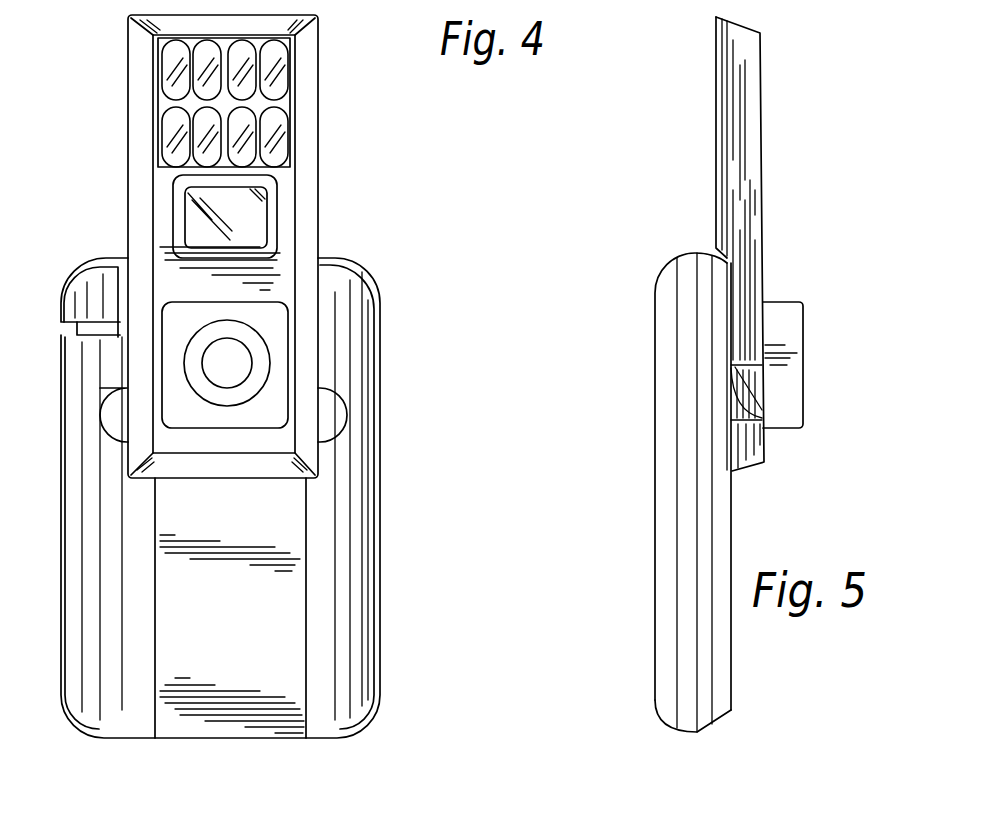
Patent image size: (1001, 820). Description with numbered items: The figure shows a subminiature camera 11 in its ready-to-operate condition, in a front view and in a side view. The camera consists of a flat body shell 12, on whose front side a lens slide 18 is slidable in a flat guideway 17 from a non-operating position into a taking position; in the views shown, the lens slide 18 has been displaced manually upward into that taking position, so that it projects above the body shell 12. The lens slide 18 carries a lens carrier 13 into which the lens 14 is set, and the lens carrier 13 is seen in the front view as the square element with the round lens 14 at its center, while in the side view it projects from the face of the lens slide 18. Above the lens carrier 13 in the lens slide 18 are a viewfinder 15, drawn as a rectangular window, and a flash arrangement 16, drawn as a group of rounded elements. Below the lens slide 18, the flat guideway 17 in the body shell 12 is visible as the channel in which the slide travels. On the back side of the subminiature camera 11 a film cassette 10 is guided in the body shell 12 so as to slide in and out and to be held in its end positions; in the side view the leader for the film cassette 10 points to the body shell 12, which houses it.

In FIG. 5, the film cassette 10 is at (660, 287).
In FIG. 4, the subminiature camera 11 is at (83, 113).
In FIG. 4, the body shell 12 is at (365, 318).
In FIG. 5, the body shell 12 is at (722, 690).
In FIG. 4, the lens carrier 13 is at (278, 325).
In FIG. 5, the lens carrier 13 is at (784, 326).
In FIG. 4, the lens 14 is at (247, 372).
In FIG. 4, the viewfinder 15 is at (253, 202).
In FIG. 4, the flash arrangement 16 is at (283, 133).
In FIG. 4, the flat guideway 17 is at (303, 506).
In FIG. 4, the lens slide 18 is at (310, 37).
In FIG. 5, the lens slide 18 is at (748, 62).